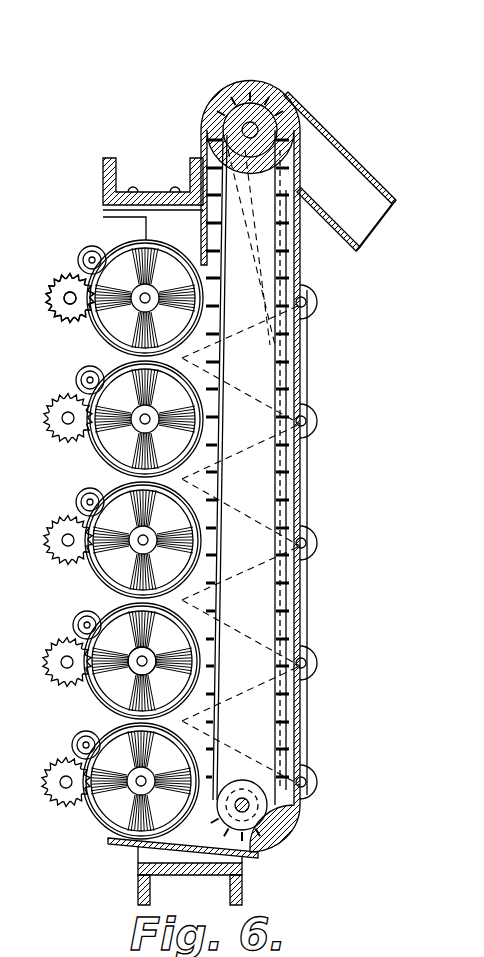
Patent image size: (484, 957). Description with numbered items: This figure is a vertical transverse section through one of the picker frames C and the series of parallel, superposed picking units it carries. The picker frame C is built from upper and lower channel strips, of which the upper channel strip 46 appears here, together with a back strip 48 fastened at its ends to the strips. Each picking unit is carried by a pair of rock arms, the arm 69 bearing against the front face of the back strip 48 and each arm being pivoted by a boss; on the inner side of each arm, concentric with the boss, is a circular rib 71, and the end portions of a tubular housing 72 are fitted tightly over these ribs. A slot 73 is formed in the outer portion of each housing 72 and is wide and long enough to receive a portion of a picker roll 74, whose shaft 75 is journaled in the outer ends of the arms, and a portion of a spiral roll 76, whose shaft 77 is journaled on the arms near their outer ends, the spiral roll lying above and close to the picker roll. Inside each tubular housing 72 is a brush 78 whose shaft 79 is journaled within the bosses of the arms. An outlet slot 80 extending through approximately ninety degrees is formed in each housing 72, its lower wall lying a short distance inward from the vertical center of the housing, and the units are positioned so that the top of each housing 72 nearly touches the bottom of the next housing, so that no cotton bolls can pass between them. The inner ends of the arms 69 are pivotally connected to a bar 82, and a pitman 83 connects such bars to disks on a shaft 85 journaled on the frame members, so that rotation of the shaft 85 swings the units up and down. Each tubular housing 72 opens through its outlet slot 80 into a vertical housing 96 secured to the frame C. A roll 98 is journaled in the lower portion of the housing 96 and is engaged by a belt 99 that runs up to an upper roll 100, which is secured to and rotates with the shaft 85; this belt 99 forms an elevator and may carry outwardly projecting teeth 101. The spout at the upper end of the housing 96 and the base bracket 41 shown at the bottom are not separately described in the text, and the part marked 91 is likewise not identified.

The upper roll 100 is at (238, 112).
The shaft 85 is at (258, 124).
The pitman 83 is at (264, 208).
The discharge chute 91 is at (373, 240).
The upper channel strip 46 is at (150, 190).
The back strip 48 is at (118, 222).
The tubular housing 72 is at (170, 246).
The slot 73 is at (97, 360).
The picker roll shaft 75 is at (66, 292).
The picker roll 74 is at (55, 314).
The spiral roll 76 is at (88, 490).
The spiral roll shaft 77 is at (85, 502).
The outlet slot 80 is at (190, 580).
The brush 78 is at (112, 562).
The brush shaft 79 is at (140, 660).
The circular rib 71 is at (97, 696).
The picker frame C is at (92, 845).
The base bracket 41 is at (137, 884).
The vertical housing 96 is at (298, 372).
The bar 82 is at (318, 497).
The belt 99 is at (305, 613).
The teeth 101 is at (283, 736).
The rock arm 69 is at (318, 782).
The roll 98 is at (265, 828).